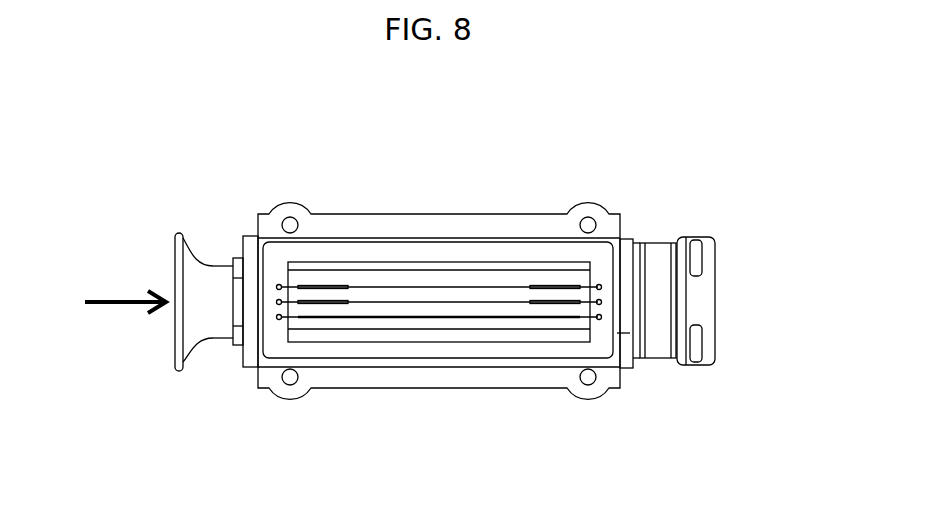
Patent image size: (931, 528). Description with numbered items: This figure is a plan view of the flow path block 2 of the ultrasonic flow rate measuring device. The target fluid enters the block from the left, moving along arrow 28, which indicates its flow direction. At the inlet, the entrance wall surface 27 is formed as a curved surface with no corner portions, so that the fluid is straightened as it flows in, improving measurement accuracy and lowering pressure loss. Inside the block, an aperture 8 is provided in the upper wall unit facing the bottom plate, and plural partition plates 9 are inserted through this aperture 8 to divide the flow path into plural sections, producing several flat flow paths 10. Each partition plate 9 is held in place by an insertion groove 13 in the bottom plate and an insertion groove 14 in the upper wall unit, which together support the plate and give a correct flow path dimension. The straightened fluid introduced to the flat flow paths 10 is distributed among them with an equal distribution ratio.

The flow path block 2 is at (735, 247).
The aperture 8 is at (412, 283).
The partition plate 9 is at (493, 317).
The flat flow path 10 is at (458, 323).
The insertion groove 13 is at (337, 286).
The insertion groove 14 is at (277, 289).
The entrance wall surface 27 is at (176, 248).
The arrow 28 is at (108, 303).